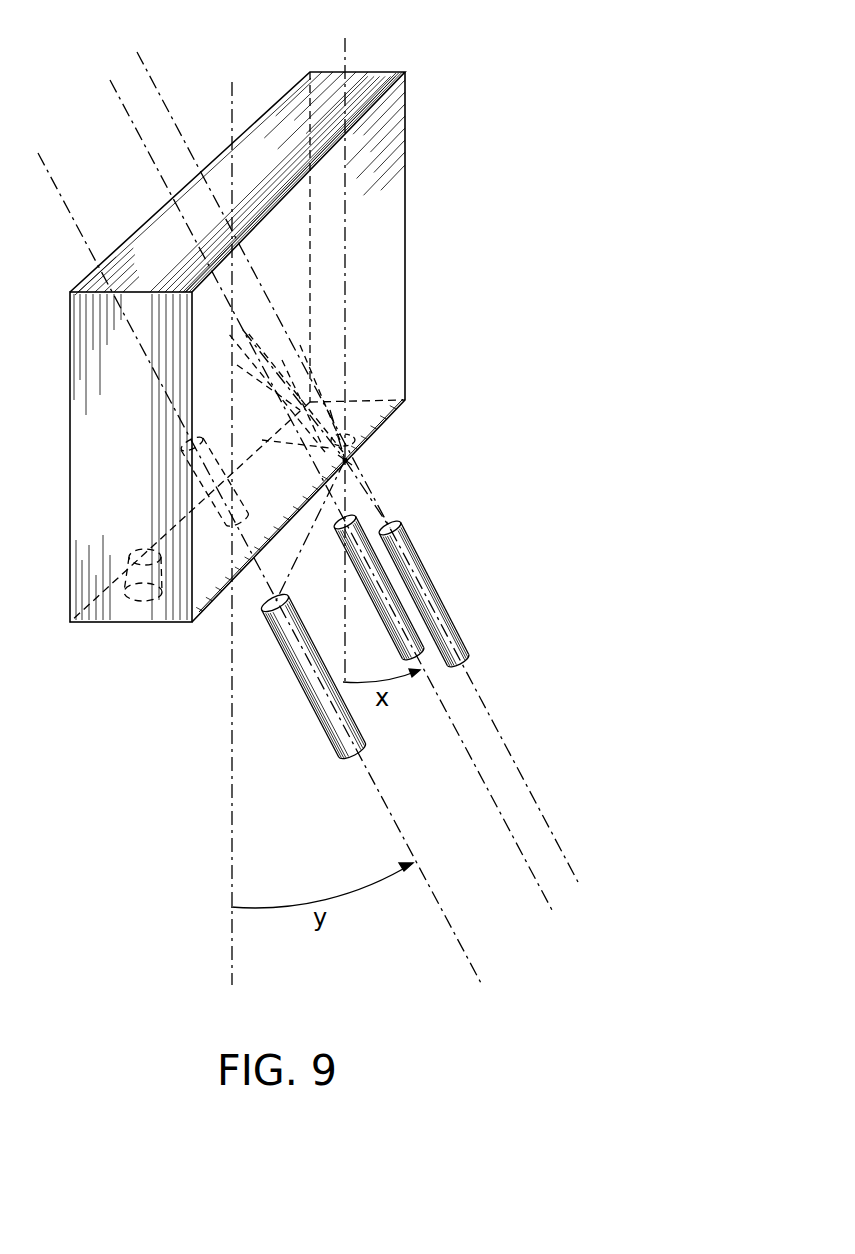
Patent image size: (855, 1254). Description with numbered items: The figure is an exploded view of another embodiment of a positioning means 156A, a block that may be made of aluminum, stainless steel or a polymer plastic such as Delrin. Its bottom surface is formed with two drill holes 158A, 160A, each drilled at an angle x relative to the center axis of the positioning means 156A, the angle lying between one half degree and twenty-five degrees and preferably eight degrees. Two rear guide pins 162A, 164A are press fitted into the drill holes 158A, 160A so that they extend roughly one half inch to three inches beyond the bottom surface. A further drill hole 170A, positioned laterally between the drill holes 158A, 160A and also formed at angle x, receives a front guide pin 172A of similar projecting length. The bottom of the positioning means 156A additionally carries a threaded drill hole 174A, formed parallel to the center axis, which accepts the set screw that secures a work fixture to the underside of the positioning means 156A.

The positioning means 156A is at (390, 158).
The drill hole 158A is at (350, 453).
The drill hole 160A is at (350, 460).
The rear guide pin 162A is at (415, 547).
The rear guide pin 164A is at (350, 520).
The drill hole 170A is at (232, 517).
The front guide pin 172A is at (298, 682).
The threaded drill hole 174A is at (127, 587).